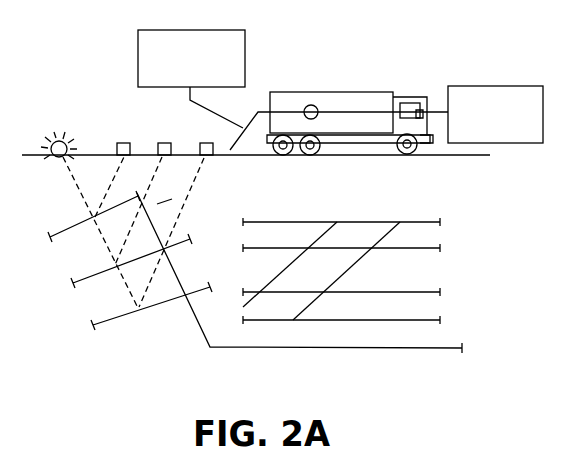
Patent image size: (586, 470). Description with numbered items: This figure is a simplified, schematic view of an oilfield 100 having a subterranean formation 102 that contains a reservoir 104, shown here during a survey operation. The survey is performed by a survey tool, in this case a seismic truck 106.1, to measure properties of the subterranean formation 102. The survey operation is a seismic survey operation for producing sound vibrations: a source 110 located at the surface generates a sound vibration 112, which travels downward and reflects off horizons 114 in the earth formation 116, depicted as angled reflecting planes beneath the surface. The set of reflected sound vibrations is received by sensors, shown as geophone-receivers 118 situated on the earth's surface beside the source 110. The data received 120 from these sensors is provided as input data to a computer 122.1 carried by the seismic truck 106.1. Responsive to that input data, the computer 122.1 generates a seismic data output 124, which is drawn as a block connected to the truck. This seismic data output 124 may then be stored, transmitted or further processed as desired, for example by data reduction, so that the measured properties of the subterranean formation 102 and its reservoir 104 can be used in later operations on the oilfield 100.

The oilfield 100 is at (457, 57).
The subterranean formation 102 is at (427, 210).
The reservoir 104 is at (416, 285).
The seismic truck 106.1 is at (370, 91).
The source 110 is at (51, 141).
The sound vibration 112 is at (101, 200).
The horizons 114 is at (54, 235).
The earth formation 116 is at (196, 318).
The geophone-receivers 118 is at (205, 143).
The data received 120 is at (167, 30).
The computer 122.1 is at (310, 104).
The seismic data output 124 is at (513, 86).